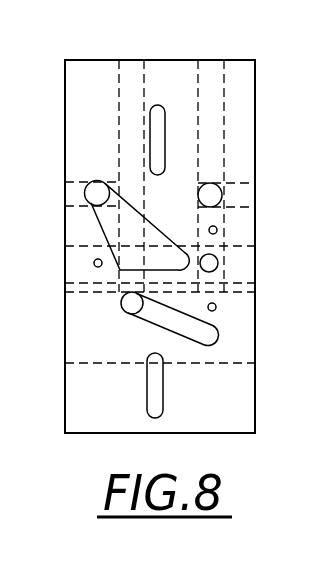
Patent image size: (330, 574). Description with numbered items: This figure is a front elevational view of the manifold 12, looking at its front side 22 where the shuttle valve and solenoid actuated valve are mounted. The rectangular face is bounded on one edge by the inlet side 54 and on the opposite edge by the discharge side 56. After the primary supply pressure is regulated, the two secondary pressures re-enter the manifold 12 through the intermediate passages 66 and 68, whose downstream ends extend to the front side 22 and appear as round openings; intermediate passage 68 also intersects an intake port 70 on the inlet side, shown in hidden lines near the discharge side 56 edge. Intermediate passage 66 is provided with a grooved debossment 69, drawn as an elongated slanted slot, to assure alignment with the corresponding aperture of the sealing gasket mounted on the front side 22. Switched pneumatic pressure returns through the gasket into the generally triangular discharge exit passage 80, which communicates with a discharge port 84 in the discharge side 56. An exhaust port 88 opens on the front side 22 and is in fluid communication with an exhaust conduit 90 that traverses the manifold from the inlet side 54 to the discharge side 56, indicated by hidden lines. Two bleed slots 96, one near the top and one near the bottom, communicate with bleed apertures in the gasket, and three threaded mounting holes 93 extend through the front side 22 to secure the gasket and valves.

The manifold 12 is at (231, 53).
The front side 22 is at (85, 64).
The inlet side 54 is at (255, 82).
The discharge side 56 is at (65, 88).
The intermediate passage 66 is at (127, 310).
The intermediate passage 68 is at (215, 192).
The grooved debossment 69 is at (200, 339).
The intake port 70 is at (258, 190).
The discharge exit passage 80 is at (147, 235).
The discharge port 84 is at (65, 190).
The exhaust port 88 is at (218, 266).
The exhaust conduit 90 is at (256, 278).
The threaded mounting holes 93 is at (217, 230).
The bleed slots 96 is at (163, 113).